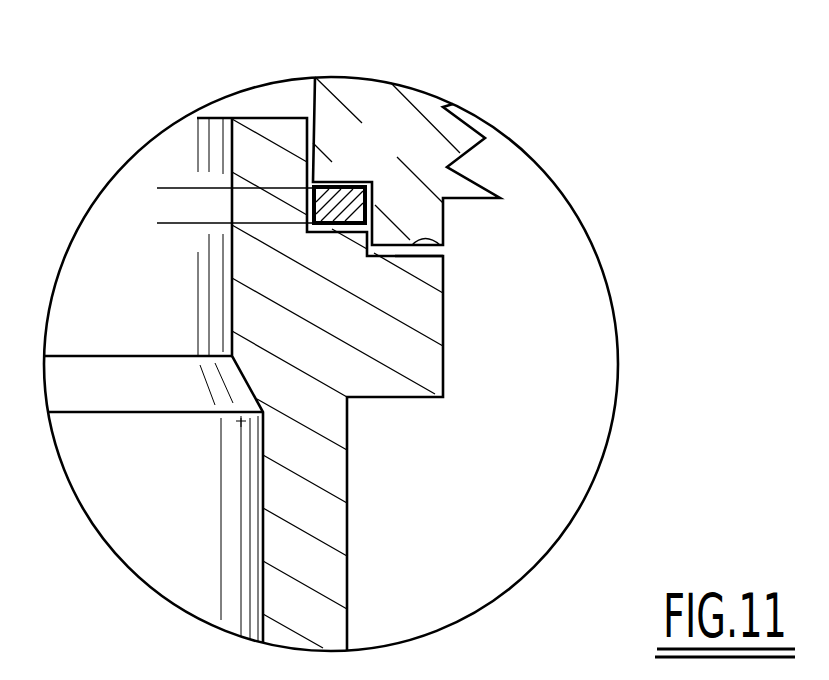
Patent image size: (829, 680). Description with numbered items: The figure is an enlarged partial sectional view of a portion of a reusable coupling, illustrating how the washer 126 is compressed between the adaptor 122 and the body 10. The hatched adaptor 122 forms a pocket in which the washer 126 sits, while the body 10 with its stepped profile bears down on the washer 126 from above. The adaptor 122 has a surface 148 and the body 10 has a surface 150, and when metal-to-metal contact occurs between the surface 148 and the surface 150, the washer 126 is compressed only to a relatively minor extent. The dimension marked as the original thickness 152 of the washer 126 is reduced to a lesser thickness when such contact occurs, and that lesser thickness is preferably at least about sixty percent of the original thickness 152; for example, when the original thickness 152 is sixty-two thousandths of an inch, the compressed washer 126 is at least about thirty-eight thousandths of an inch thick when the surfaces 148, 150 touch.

The body 10 is at (395, 78).
The adaptor 122 is at (349, 509).
The washer 126 is at (338, 202).
The surface 148 is at (415, 258).
The surface 150 is at (442, 240).
The original thickness 152 is at (168, 160).